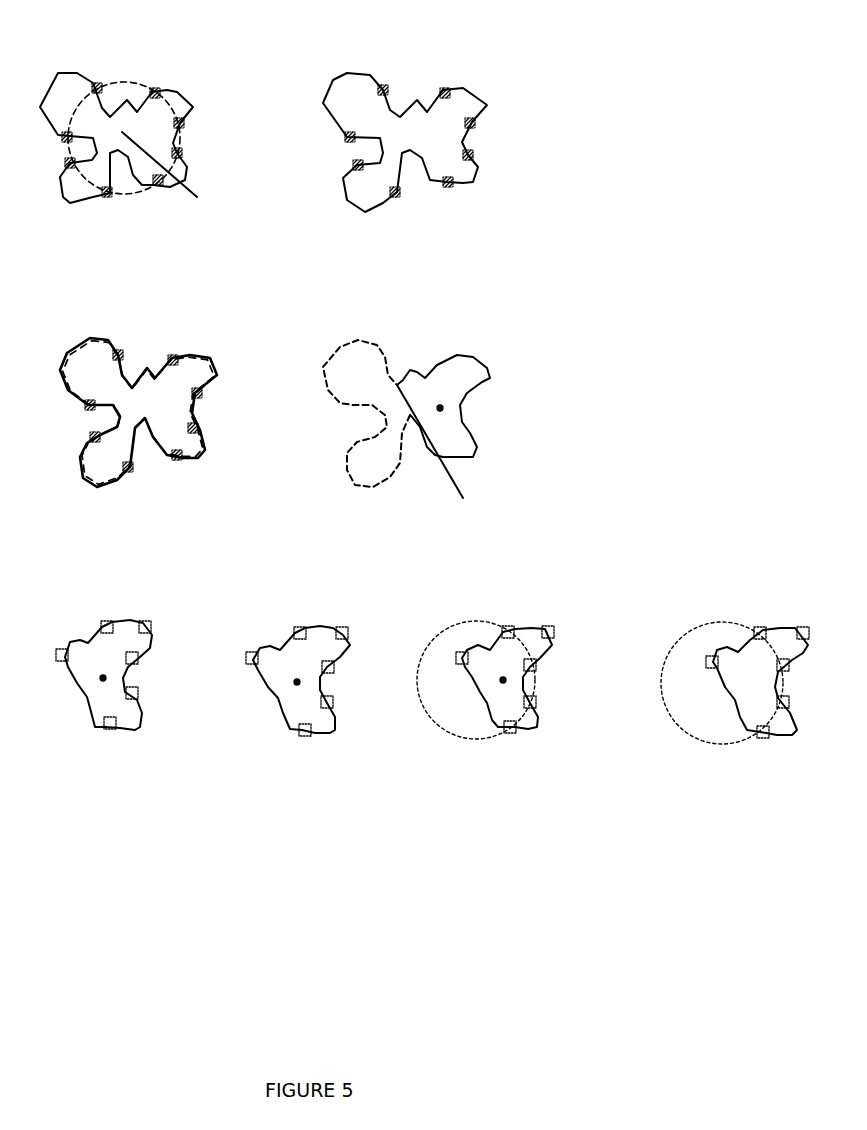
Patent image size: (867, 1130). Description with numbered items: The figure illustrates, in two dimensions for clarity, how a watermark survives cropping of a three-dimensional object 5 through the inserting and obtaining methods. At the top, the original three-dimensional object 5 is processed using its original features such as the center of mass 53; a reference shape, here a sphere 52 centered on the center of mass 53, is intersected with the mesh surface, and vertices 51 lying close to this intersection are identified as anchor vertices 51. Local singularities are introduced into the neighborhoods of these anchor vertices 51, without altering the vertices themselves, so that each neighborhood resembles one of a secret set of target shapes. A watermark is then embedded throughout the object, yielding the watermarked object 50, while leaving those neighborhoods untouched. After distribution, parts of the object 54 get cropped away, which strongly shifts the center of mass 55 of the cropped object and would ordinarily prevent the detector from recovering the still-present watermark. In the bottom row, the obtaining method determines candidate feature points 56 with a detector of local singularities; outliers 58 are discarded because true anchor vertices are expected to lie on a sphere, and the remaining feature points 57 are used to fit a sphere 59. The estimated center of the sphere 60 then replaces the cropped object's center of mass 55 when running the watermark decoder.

The 3D object 5 is at (58, 72).
The anchor vertices 51 is at (95, 82).
The sphere 52 is at (135, 82).
The center of mass 53 is at (313, 324).
The watermarked object 50 is at (210, 357).
The cropped parts of the object 54 is at (358, 355).
The center of mass of the cropped object 55 is at (440, 400).
The candidate feature points 56 is at (150, 647).
The retained feature points 57 is at (298, 632).
The outliers 58 is at (340, 630).
The fitted sphere 59 is at (442, 630).
The estimated center of the sphere 60 is at (725, 685).